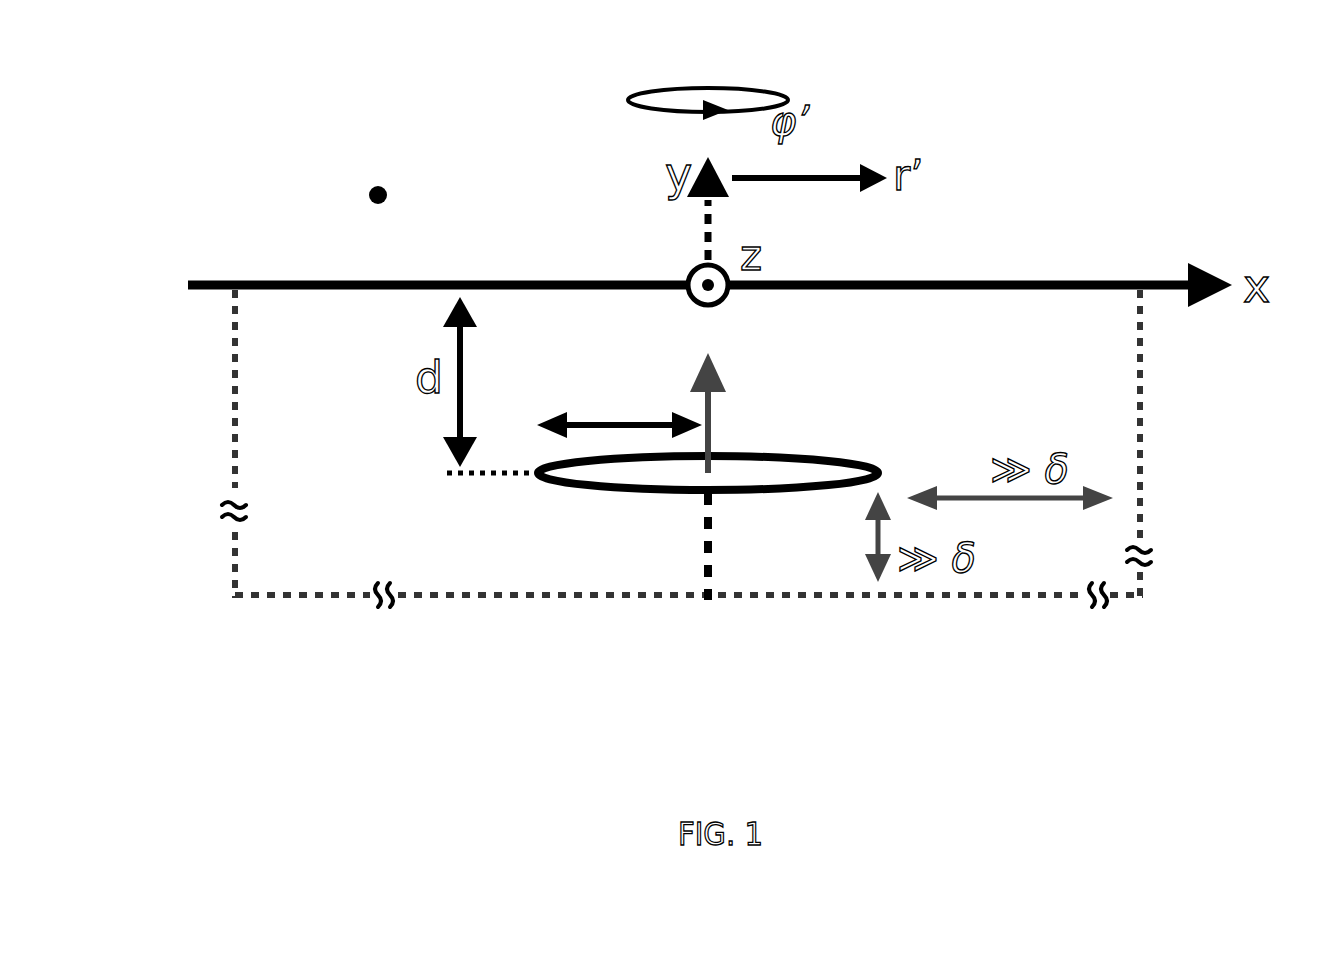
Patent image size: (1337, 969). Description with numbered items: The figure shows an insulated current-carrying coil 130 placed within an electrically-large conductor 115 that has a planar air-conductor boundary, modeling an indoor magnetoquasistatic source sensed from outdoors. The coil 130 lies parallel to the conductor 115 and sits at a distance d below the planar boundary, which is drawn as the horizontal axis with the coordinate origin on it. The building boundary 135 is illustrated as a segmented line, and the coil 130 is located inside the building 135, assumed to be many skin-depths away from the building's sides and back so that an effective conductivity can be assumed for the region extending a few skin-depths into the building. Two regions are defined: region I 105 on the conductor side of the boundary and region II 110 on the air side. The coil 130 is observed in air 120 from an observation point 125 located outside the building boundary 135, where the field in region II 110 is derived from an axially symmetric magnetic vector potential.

The region I 105 is at (1181, 370).
The region II 110 is at (1172, 200).
The conductor 115 is at (169, 358).
The air 120 is at (242, 188).
The observation point 125 is at (345, 166).
The coil 130 is at (798, 535).
The building boundary 135 is at (565, 660).